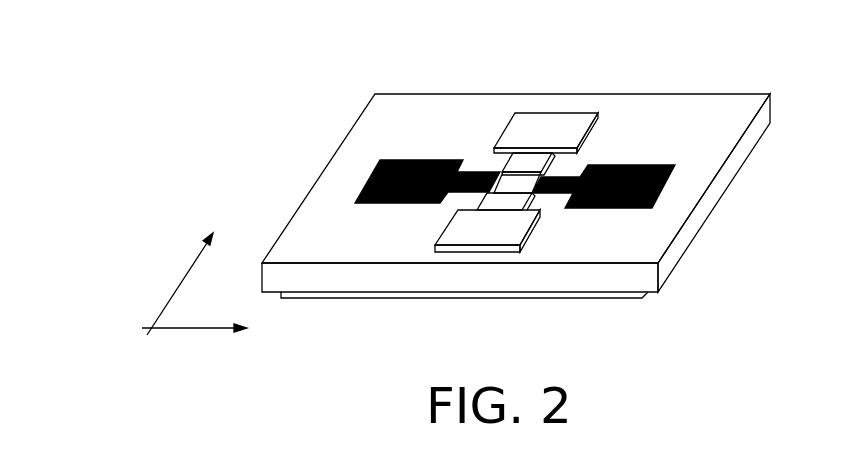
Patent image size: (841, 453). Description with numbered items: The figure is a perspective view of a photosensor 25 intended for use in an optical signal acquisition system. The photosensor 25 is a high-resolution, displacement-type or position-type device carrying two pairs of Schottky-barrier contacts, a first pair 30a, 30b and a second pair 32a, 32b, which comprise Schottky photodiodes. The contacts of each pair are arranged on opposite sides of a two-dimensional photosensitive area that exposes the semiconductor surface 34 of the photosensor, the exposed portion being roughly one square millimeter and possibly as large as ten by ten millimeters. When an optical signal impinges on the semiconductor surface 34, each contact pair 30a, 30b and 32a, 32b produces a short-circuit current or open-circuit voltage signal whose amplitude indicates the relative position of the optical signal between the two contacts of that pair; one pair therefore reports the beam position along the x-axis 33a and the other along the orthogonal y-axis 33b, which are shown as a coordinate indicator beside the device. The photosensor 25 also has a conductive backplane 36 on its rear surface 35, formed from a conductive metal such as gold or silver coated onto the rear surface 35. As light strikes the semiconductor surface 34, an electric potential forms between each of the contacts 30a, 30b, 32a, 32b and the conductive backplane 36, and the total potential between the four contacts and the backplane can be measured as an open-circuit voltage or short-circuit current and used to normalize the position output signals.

The photosensor 25 is at (737, 78).
The Schottky-barrier contact 30a is at (368, 180).
The Schottky-barrier contact 30b is at (637, 165).
The Schottky-barrier contact 32a is at (565, 113).
The Schottky-barrier contact 32b is at (482, 253).
The x-axis 33a is at (193, 330).
The y-axis 33b is at (181, 280).
The semiconductor surface 34 is at (503, 175).
The rear surface 35 is at (658, 289).
The conductive backplane 36 is at (318, 298).